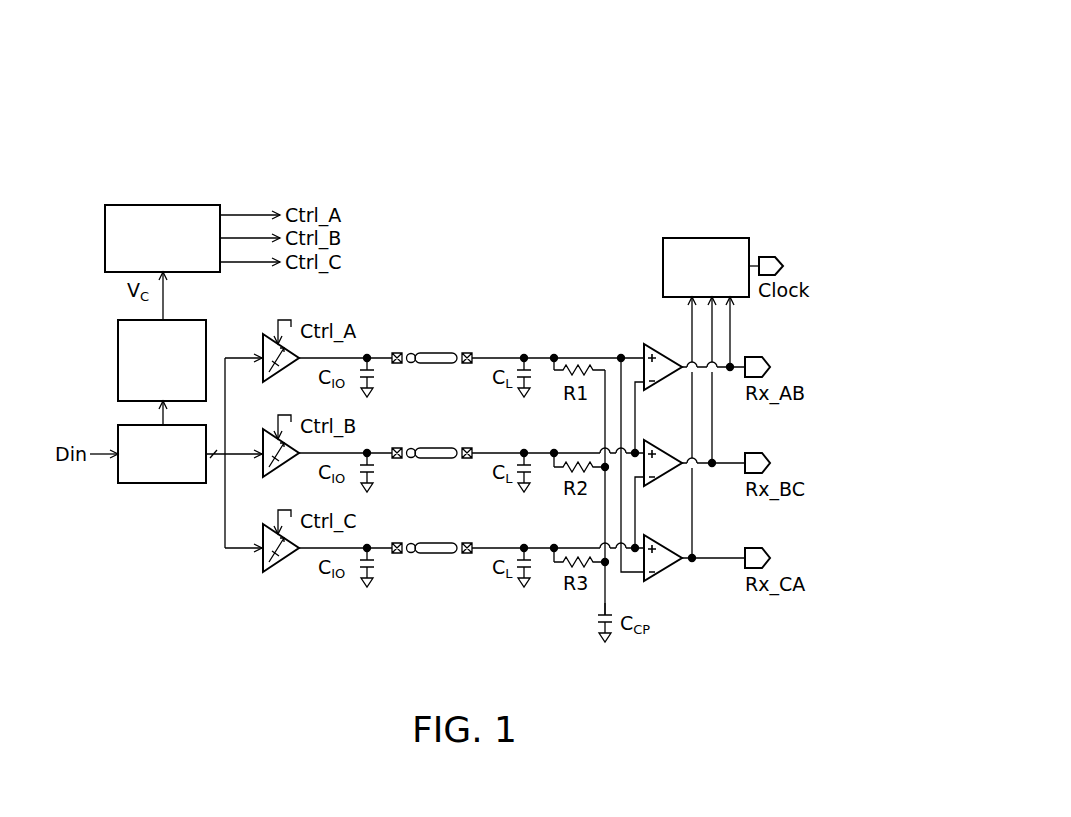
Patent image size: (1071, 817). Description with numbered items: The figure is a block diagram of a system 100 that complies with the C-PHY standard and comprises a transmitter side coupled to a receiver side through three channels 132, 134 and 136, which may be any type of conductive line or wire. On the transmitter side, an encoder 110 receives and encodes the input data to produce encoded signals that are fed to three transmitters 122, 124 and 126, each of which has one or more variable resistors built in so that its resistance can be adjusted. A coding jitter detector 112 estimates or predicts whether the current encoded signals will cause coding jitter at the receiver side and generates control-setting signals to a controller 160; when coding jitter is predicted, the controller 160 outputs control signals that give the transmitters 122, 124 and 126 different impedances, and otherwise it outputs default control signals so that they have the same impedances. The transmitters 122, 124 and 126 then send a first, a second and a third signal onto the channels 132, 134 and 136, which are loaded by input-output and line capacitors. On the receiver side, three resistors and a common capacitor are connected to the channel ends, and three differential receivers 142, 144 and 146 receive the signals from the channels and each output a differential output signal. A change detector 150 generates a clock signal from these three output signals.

The system 100 is at (712, 86).
The encoder 110 is at (165, 483).
The coding jitter detector 112 is at (206, 330).
The transmitter 122 is at (285, 375).
The transmitter 124 is at (285, 470).
The transmitter 126 is at (285, 565).
The channel 132 is at (432, 364).
The channel 134 is at (432, 459).
The channel 136 is at (432, 554).
The differential receiver 142 is at (663, 381).
The differential receiver 144 is at (663, 477).
The differential receiver 146 is at (663, 572).
The change detector 150 is at (722, 238).
The controller 160 is at (183, 205).